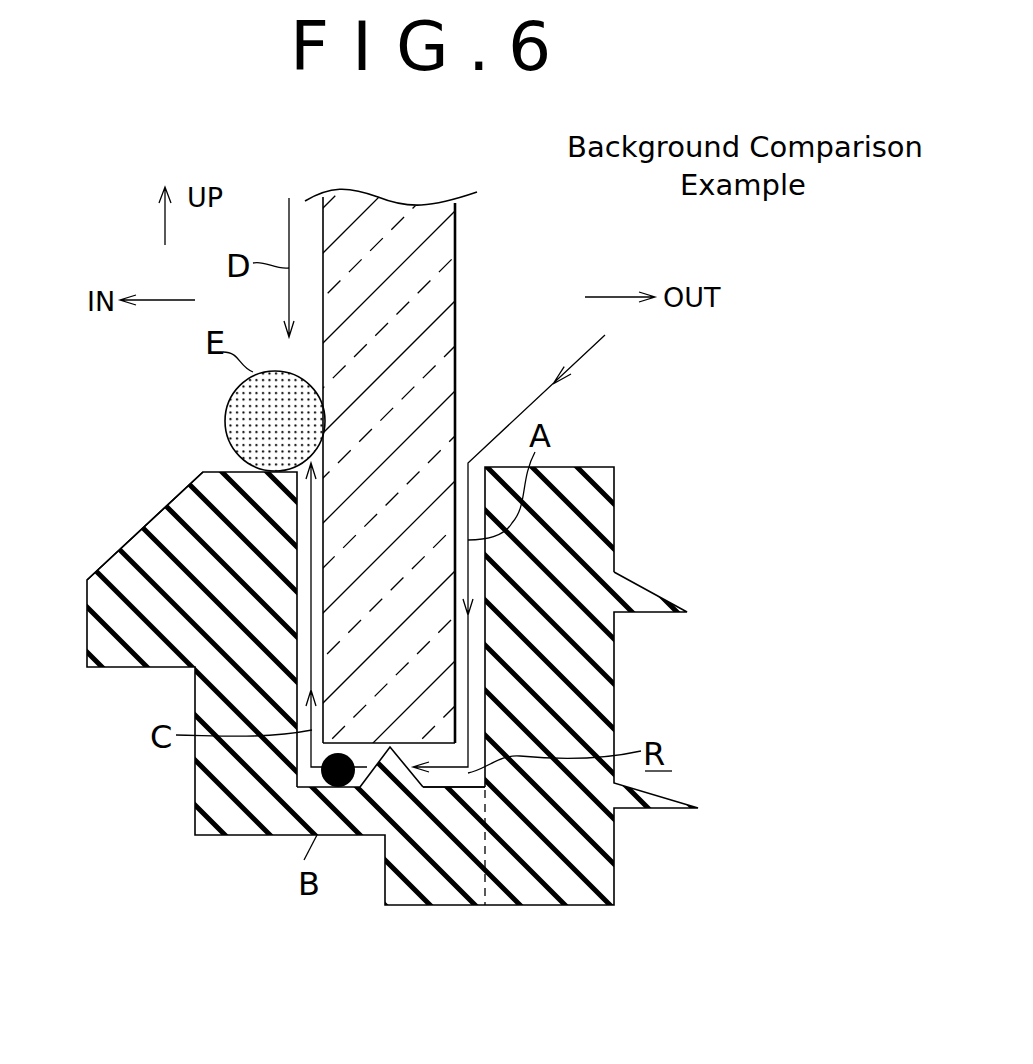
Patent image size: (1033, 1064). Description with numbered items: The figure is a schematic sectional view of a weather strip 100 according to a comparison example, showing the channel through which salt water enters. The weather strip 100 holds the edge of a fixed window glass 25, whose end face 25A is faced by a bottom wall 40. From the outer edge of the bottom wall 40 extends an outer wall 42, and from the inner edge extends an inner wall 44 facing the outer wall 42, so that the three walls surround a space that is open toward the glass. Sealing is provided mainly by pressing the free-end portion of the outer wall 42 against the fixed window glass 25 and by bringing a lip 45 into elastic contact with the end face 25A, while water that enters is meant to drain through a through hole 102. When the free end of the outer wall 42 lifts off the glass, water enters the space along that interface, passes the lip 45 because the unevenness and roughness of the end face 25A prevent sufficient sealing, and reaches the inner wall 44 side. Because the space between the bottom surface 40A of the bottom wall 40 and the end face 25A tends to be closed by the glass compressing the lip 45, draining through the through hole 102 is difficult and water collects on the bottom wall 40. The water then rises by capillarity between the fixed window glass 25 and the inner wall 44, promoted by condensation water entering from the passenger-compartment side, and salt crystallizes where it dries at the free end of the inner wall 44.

The fixed window glass 25 is at (445, 280).
The end face 25A is at (325, 748).
The bottom wall 40 is at (345, 790).
The bottom surface 40A is at (468, 775).
The outer wall 42 is at (612, 520).
The inner wall 44 is at (222, 493).
The lip 45 is at (437, 774).
The weather strip 100 is at (655, 672).
The through hole 102 is at (476, 862).